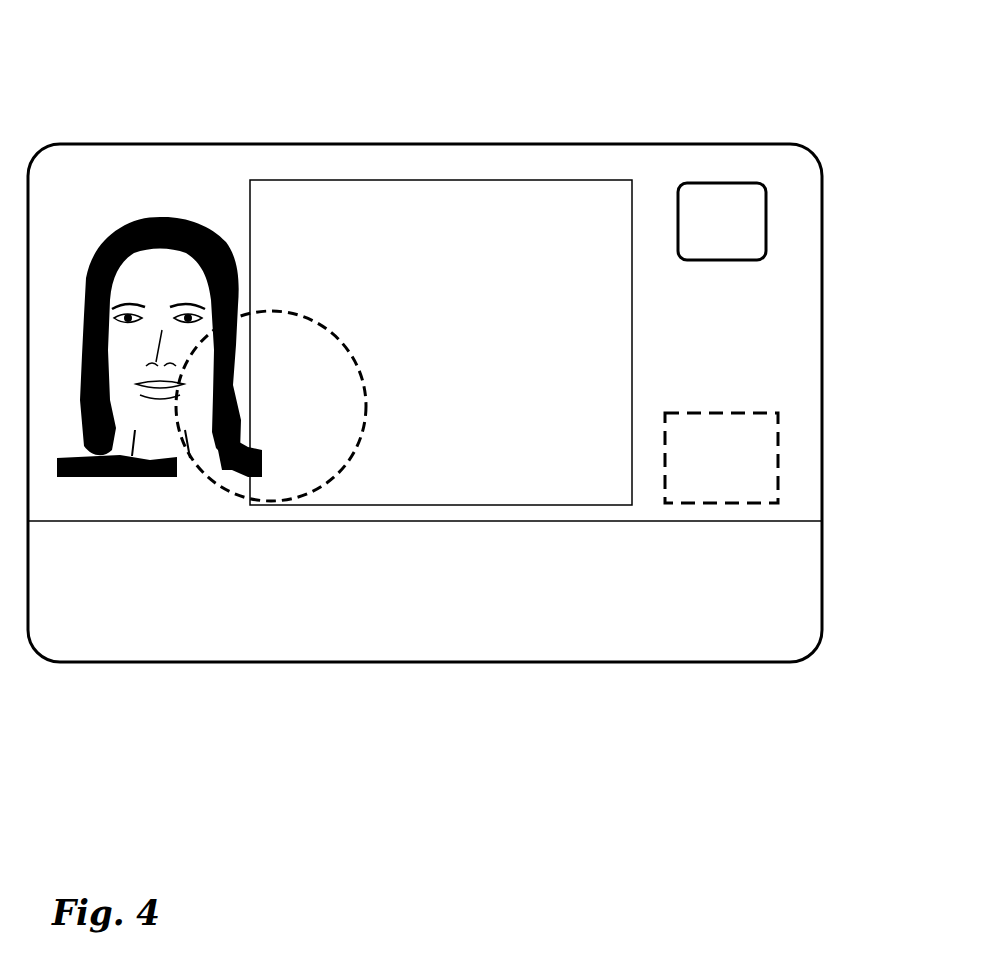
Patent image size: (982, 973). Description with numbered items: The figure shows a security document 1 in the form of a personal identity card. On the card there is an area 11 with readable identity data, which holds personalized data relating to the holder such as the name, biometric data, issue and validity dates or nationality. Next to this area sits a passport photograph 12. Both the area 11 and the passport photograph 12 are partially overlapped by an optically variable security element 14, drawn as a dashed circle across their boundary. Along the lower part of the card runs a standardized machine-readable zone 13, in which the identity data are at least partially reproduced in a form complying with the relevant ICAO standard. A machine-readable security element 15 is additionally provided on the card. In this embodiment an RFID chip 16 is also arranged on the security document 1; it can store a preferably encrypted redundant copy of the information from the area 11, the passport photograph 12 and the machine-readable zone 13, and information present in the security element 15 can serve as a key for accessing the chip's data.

The security document 1 is at (753, 78).
The area with readable identity data 11 is at (358, 178).
The passport photograph 12 is at (157, 213).
The machine-readable zone 13 is at (790, 665).
The optically variable security element 14 is at (223, 493).
The machine-readable security element 15 is at (718, 503).
The RFID chip 16 is at (767, 183).